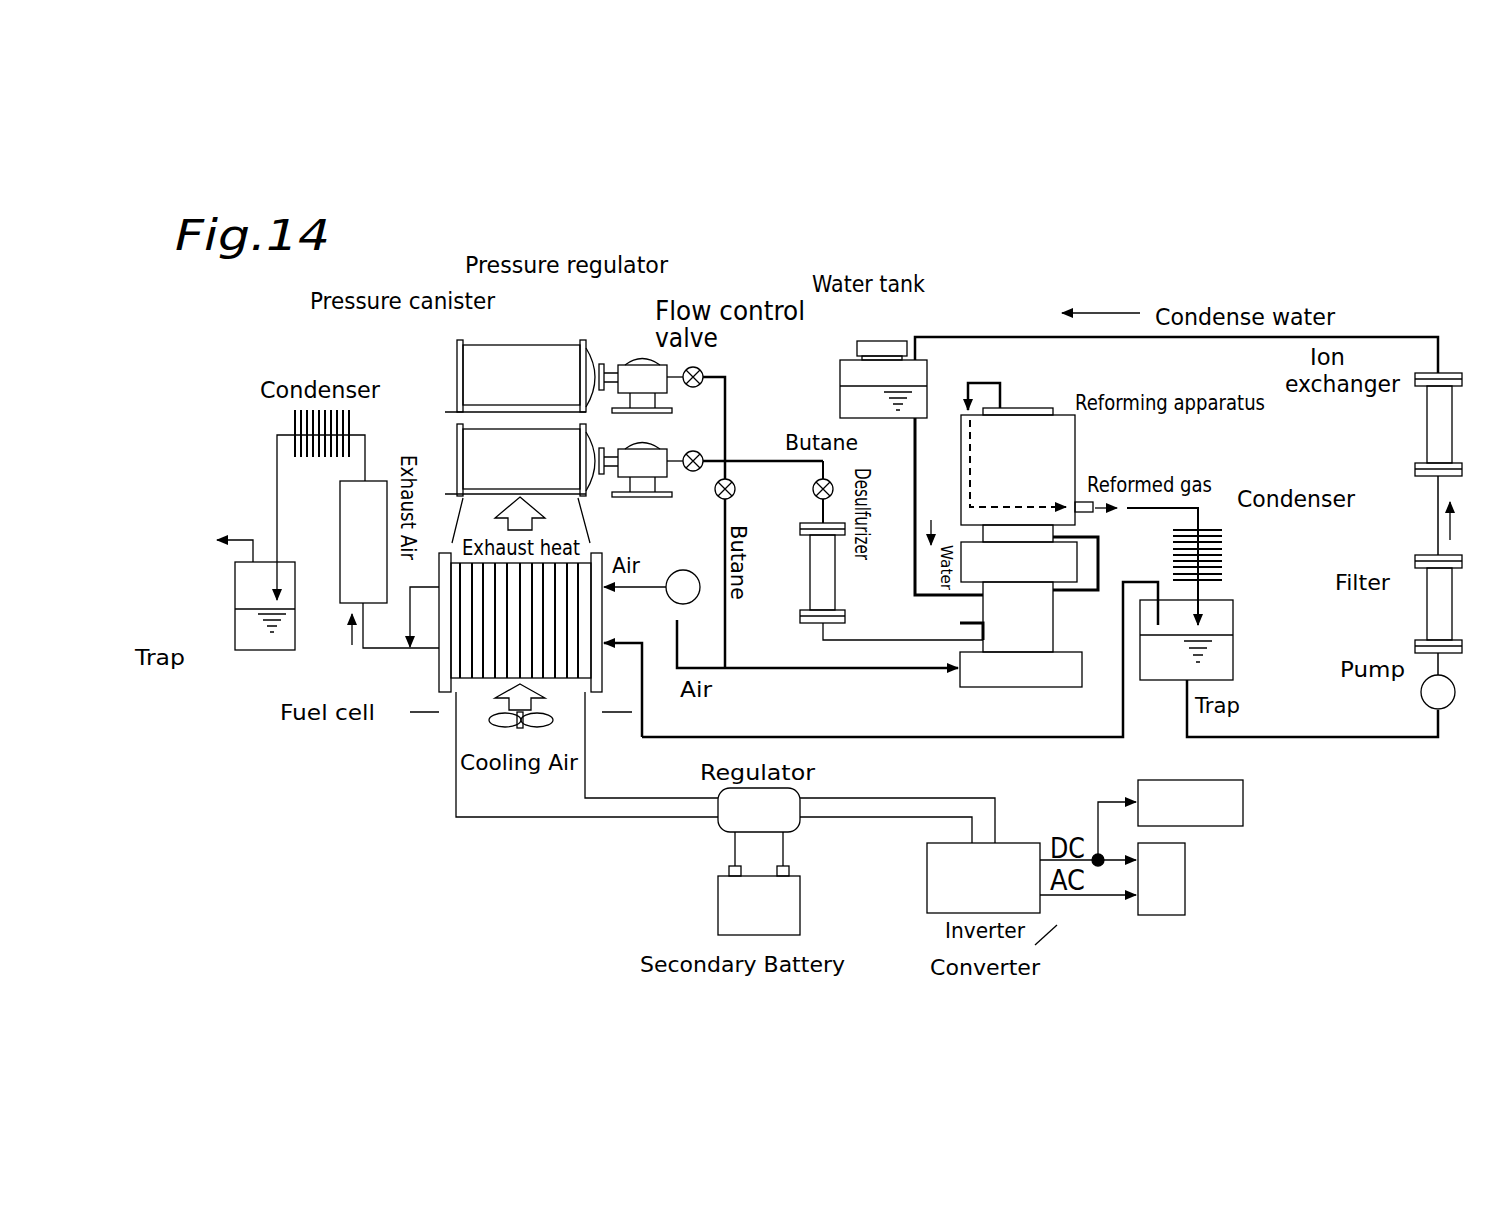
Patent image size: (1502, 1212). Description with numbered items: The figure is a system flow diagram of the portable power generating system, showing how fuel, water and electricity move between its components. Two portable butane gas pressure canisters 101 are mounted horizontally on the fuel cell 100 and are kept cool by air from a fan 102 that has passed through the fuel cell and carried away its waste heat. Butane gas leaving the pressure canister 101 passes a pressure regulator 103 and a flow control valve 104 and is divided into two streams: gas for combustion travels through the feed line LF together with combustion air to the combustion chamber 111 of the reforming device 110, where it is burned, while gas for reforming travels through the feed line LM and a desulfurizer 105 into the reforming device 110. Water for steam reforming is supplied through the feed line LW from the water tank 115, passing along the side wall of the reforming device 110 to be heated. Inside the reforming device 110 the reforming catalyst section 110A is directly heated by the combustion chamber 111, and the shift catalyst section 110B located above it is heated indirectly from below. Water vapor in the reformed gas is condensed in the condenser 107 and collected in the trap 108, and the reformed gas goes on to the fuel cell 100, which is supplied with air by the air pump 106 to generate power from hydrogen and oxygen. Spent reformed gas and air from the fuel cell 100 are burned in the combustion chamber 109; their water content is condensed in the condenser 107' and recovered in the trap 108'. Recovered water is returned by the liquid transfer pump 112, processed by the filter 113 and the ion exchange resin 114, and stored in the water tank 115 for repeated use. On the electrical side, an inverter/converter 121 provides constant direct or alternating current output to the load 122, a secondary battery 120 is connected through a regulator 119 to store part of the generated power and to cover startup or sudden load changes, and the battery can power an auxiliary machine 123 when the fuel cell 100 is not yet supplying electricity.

The fuel cell 100 is at (455, 655).
The portable butane gas pressure canister 101 is at (482, 467).
The fan 102 is at (490, 722).
The pressure regulator 103 is at (643, 457).
The flow control valve 104 is at (708, 455).
The desulfurizer 105 is at (833, 596).
The air pump 106 is at (686, 568).
The condenser 107 is at (1241, 550).
The condenser 107' is at (281, 499).
The trap 108 is at (1289, 668).
The trap 108' is at (225, 595).
The combustion chamber 109 is at (340, 540).
The reforming device 110 is at (1078, 433).
The reforming catalyst section 110A is at (1018, 617).
The shift catalyst section 110B is at (1027, 406).
The combustion chamber 111 is at (1021, 669).
The liquid transfer pump 112 is at (1421, 698).
The filter 113 is at (1427, 612).
The ion exchange resin 114 is at (1427, 427).
The water tank 115 is at (845, 358).
The regulator 119 is at (783, 818).
The secondary battery 120 is at (728, 908).
The inverter/converter 121 is at (928, 880).
The load 122 is at (1187, 890).
The auxiliary machine 123 is at (1245, 802).
The feed line LW is at (918, 495).
The feed line LM is at (885, 637).
The feed line LF is at (868, 672).